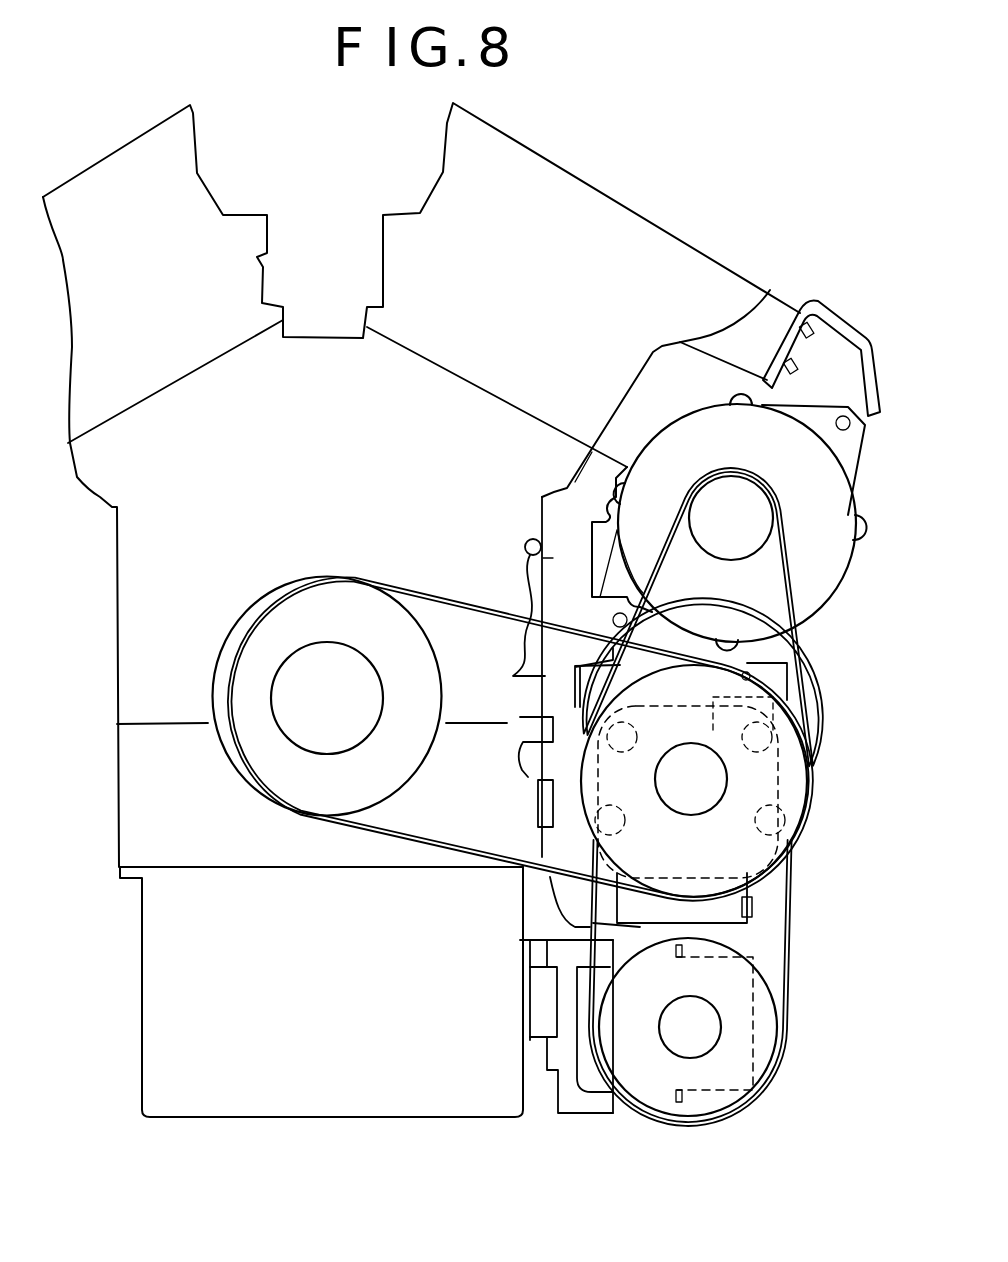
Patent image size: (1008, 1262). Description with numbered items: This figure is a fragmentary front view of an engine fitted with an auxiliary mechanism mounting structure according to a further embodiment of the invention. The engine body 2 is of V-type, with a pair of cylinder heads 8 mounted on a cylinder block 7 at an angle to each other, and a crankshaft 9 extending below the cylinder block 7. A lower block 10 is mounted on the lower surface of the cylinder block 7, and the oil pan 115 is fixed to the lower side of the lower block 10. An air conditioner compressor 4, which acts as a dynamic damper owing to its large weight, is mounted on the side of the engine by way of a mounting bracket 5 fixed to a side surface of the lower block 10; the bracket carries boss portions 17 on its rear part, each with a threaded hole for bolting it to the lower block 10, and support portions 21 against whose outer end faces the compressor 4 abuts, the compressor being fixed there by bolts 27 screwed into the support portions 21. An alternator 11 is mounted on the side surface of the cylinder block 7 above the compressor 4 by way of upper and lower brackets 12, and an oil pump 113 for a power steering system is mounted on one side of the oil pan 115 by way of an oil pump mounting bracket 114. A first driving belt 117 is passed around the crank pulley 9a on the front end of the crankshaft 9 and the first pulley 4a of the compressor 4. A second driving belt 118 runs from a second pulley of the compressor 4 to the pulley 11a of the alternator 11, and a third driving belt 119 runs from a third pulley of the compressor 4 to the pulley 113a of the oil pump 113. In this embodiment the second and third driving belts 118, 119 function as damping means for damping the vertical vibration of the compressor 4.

The engine body 2 is at (312, 288).
The compressor 4 is at (795, 688).
The first pulley 4a is at (792, 780).
The mounting bracket 5 is at (545, 906).
The cylinder block 7 is at (133, 638).
The cylinder heads 8 is at (190, 203).
The crankshaft 9 is at (295, 662).
The crank pulley 9a is at (395, 760).
The lower block 10 is at (268, 850).
The alternator 11 is at (820, 560).
The pulley of the alternator 11a is at (747, 503).
The upper and lower brackets 12 is at (853, 360).
The boss portions 17 is at (532, 750).
The support portions 21 is at (590, 682).
The bolts 27 is at (747, 655).
The oil pump 113 is at (760, 983).
The pulley for the oil pump 113a is at (767, 1033).
The oil pump mounting bracket 114 is at (585, 1107).
The oil pan 115 is at (425, 1098).
The first driving belt 117 is at (420, 592).
The second driving belt 118 is at (652, 565).
The third driving belt 119 is at (787, 933).